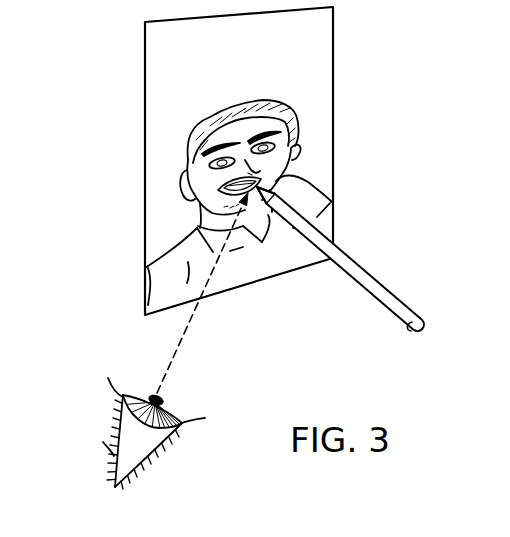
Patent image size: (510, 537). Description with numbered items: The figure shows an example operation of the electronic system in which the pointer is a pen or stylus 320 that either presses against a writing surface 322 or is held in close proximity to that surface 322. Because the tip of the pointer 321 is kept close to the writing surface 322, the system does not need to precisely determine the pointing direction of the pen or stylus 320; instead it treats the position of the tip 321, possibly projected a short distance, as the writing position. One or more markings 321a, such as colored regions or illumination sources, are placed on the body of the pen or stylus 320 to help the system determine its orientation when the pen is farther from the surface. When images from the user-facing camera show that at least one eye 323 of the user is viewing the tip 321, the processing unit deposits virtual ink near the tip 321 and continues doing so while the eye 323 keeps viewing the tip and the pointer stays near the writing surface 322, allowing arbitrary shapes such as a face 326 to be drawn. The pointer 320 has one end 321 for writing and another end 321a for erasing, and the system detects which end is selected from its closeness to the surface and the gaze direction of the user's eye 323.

The pen or stylus 320 is at (347, 281).
The tip of the pointer 321 is at (335, 194).
The marking 321a is at (402, 326).
The writing surface 322 is at (152, 116).
The eye 323 is at (115, 457).
The face 326 is at (240, 98).